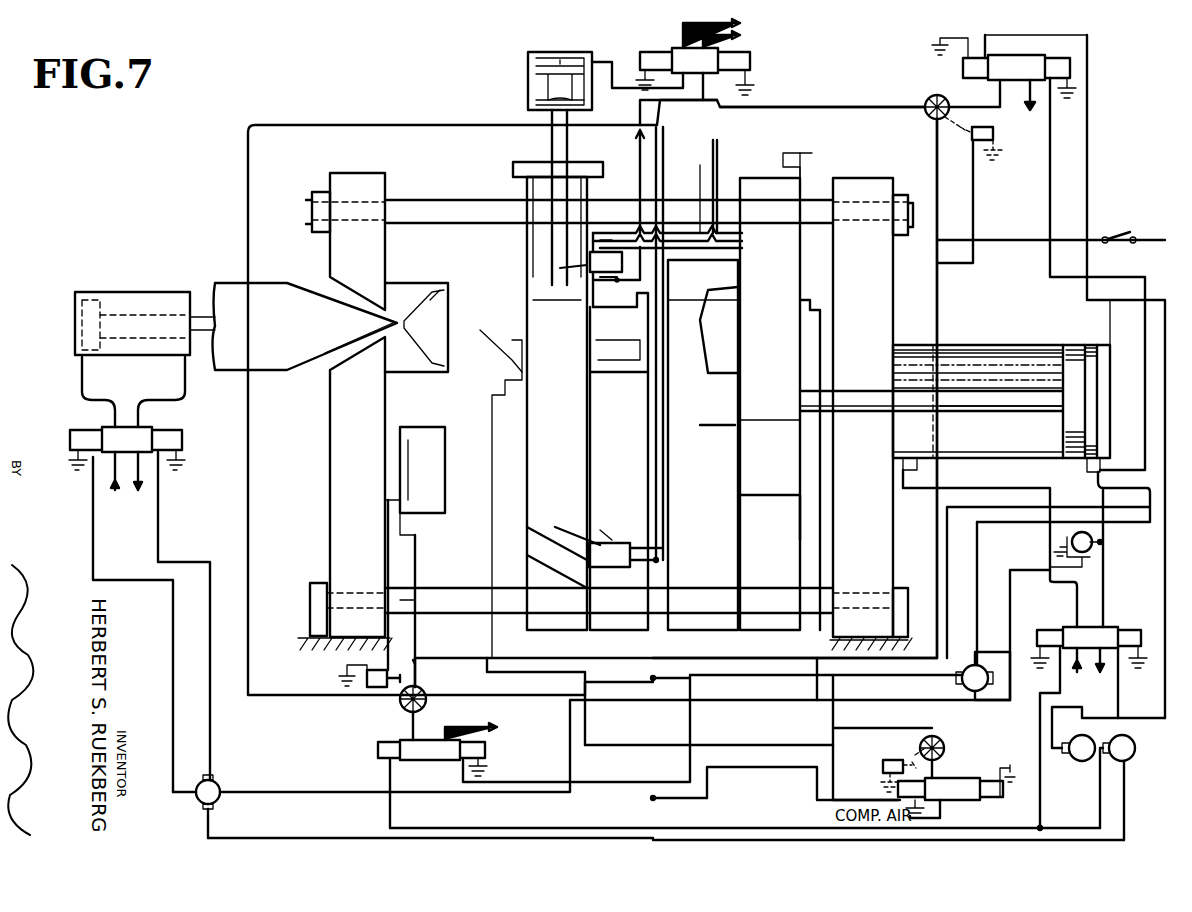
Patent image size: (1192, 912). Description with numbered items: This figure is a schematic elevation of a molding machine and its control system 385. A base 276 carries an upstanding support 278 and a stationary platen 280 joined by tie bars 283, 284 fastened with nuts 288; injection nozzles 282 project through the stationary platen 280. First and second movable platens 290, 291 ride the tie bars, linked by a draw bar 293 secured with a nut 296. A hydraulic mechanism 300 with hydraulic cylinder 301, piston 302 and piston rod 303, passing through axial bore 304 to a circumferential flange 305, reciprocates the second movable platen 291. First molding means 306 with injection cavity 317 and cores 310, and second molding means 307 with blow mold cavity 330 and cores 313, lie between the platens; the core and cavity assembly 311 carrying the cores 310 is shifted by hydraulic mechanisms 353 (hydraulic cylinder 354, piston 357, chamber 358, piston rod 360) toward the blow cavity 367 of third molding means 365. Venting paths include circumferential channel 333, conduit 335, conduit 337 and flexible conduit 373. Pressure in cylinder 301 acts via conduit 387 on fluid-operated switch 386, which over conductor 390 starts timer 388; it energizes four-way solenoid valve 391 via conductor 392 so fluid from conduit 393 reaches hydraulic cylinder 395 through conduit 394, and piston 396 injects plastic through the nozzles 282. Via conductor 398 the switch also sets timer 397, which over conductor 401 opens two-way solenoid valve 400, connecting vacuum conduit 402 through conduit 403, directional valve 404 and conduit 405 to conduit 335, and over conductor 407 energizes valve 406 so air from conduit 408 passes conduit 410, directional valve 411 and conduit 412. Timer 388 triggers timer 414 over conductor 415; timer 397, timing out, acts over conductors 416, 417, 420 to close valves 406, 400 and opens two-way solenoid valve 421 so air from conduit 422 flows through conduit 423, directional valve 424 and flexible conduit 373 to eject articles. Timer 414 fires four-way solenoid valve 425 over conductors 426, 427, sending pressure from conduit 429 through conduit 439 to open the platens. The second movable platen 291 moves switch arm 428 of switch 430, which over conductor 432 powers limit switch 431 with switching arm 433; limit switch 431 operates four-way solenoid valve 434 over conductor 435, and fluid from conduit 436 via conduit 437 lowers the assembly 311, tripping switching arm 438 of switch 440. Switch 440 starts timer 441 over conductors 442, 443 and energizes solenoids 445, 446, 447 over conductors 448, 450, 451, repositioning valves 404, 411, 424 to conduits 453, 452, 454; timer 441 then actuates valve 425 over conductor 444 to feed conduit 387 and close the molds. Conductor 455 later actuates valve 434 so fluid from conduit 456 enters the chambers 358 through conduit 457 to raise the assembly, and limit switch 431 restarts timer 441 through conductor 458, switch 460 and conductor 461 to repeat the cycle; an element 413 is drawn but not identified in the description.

The lower tie bar 276 is at (302, 636).
The rear platen 278 is at (880, 312).
The front platen 280 is at (358, 412).
The extruder nozzle 282 is at (328, 330).
The upper tie bar 283 is at (426, 200).
The lower tie bar section 284 is at (443, 603).
The tie bar nuts 288 is at (318, 196).
The toggle link 290 is at (545, 580).
The ejector plate 291 is at (774, 448).
The movable mold platen 293 is at (698, 520).
The movable platen 296 is at (522, 512).
The clamp cylinder 300 is at (1001, 337).
The cylinder bore 301 is at (1040, 366).
The clamp piston 302 is at (1063, 420).
The piston rod 303 is at (950, 406).
The piston rod extension 304 is at (852, 391).
The mold half 305 is at (774, 414).
The stationary mold half 306 is at (472, 264).
The movable mold half 307 is at (647, 390).
The sprue bushing 310 is at (482, 330).
The runner 311 is at (554, 342).
The core 313 is at (702, 340).
The sprue 317 is at (440, 296).
The ejector block 330 is at (606, 300).
The ejector pin 333 is at (506, 380).
The control line 335 is at (652, 172).
The mold cavity 337 is at (756, 298).
The shut-off cylinder 353 is at (524, 51).
The cylinder housing 354 is at (528, 94).
The shut-off piston 357 is at (552, 60).
The support plate 358 is at (520, 141).
The shut-off rod 360 is at (560, 190).
The limit switch 365 is at (355, 513).
The switch actuator 367 is at (412, 496).
The switch lead 373 is at (386, 520).
The control system 385 is at (1140, 126).
The pressure gauge 386 is at (1092, 550).
The hydraulic line 387 is at (1100, 486).
The pump 388 is at (218, 784).
The pressure line 390 is at (298, 790).
The extruder drive valve 391 is at (142, 432).
The return line 392 is at (93, 540).
The valve ports 393 is at (124, 480).
The motor line 394 is at (82, 386).
The hydraulic motor 395 is at (114, 290).
The motor shaft 396 is at (72, 300).
The relief line 397 is at (968, 654).
The relief valve 398 is at (780, 518).
The clamp control valve 400 is at (1009, 66).
The clamp supply line 401 is at (1140, 300).
The valve port 402 is at (1024, 112).
The valve line 403 is at (986, 106).
The check valve 404 is at (930, 98).
The pressure line 405 is at (800, 107).
The air valve 406 is at (956, 791).
The relief line 407 is at (986, 640).
The air supply line 408 is at (944, 816).
The flow control valve 410 is at (938, 768).
The valve line 411 is at (944, 740).
The ejector line 412 is at (822, 452).
The motor line 413 is at (172, 398).
The pressure switch 414 is at (1134, 748).
The pump suction line 415 is at (294, 838).
The return line 416 is at (590, 790).
The air line 417 is at (815, 786).
The clamp line 420 is at (1088, 96).
The shut-off valve 421 is at (404, 762).
The valve port 422 is at (474, 722).
The flow regulator 423 is at (432, 716).
The valve actuator 424 is at (404, 722).
The ejector valve 425 is at (1096, 628).
The gauge line 426 is at (1100, 777).
The control line 427 is at (1040, 744).
The limit switch 428 is at (804, 160).
The valve ports 429 is at (1090, 672).
The switch lead 430 is at (800, 152).
The switch lead 431 is at (610, 250).
The control line 432 is at (718, 172).
The shut-off block 433 is at (580, 278).
The shut-off control valve 434 is at (695, 71).
The electrical leads 435 is at (668, 252).
The valve ports 436 is at (680, 24).
The cylinder line 437 is at (620, 76).
The limit switch 438 is at (592, 528).
The return line 439 is at (1046, 478).
The switch box 440 is at (608, 566).
The pressure switch 441 is at (1096, 730).
The switch lead 442 is at (654, 566).
The return line 443 is at (660, 632).
The control line 444 is at (1120, 678).
The solenoid 445 is at (996, 140).
The solenoid 446 is at (884, 776).
The solenoid 447 is at (362, 688).
The electrical lead 448 is at (974, 206).
The control line 450 is at (730, 776).
The control line 451 is at (530, 700).
The control line 452 is at (714, 748).
The pressure line 453 is at (940, 280).
The main pressure line 454 is at (404, 118).
The electrical lead 455 is at (652, 162).
The valve ports 456 is at (738, 36).
The pressure line 457 is at (668, 100).
The electrical leads 458 is at (748, 240).
The switch 460 is at (1124, 236).
The gauge line 461 is at (1164, 534).